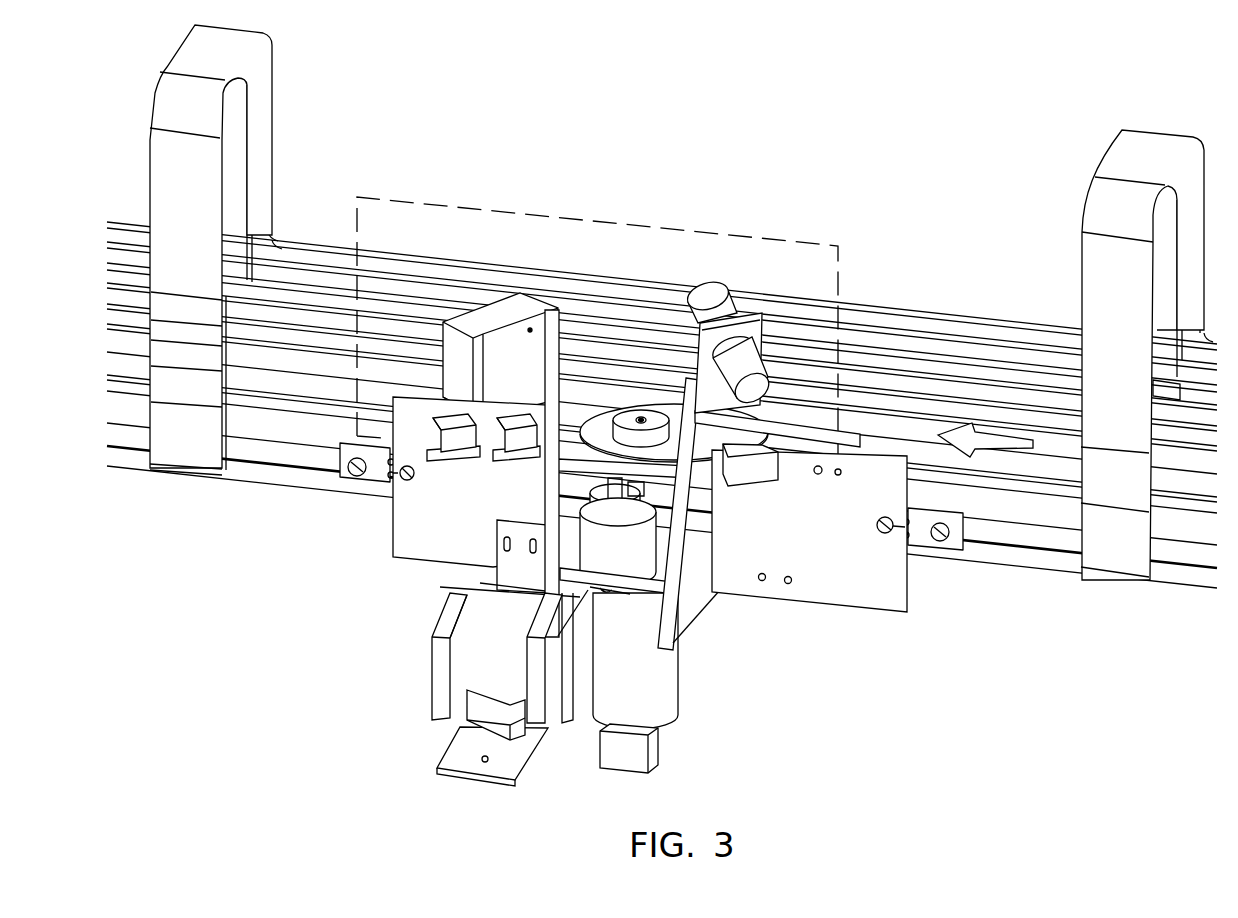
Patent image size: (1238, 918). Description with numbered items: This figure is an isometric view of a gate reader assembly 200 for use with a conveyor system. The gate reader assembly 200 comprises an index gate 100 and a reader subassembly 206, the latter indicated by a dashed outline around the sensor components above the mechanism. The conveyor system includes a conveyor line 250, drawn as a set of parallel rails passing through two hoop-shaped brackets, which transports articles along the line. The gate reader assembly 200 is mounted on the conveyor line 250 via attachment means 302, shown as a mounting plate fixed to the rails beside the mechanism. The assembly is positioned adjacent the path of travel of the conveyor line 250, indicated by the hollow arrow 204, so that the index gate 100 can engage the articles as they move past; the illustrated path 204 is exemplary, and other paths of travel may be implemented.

The index gate 100 is at (682, 724).
The gate reader assembly 200 is at (845, 425).
The path of travel 204 is at (1010, 450).
The reader subassembly 206 is at (603, 210).
The conveyor line 250 is at (956, 313).
The attachment means 302 is at (908, 607).